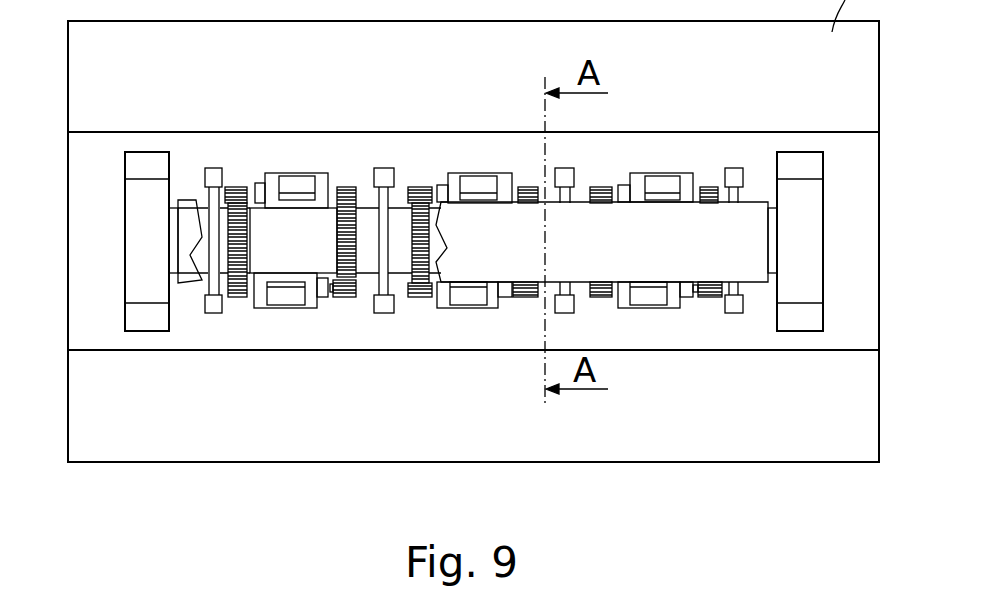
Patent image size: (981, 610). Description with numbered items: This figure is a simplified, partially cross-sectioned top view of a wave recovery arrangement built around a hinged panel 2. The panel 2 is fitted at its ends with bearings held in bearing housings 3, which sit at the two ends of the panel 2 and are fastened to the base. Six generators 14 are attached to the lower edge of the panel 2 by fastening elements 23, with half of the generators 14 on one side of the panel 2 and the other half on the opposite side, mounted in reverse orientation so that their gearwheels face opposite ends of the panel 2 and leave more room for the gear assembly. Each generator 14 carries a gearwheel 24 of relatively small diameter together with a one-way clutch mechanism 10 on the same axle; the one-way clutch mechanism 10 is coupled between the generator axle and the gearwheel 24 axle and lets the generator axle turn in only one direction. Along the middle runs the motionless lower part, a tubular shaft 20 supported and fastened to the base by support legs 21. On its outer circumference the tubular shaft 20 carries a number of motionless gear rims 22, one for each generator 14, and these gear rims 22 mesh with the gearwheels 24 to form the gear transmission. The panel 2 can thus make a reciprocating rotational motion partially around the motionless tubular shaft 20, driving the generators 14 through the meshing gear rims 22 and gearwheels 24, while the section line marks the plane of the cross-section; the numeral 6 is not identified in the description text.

The hinged panel 2 is at (190, 283).
The bearing housing 3 is at (132, 216).
The housing plate 6 is at (690, 140).
The one-way clutch mechanism 10 is at (507, 297).
The generator 14 is at (275, 178).
The tubular shaft 20 is at (403, 270).
The support leg 21 is at (213, 170).
The gear rim 22 is at (242, 300).
The fastening element 23 is at (312, 178).
The gearwheel 24 is at (420, 187).